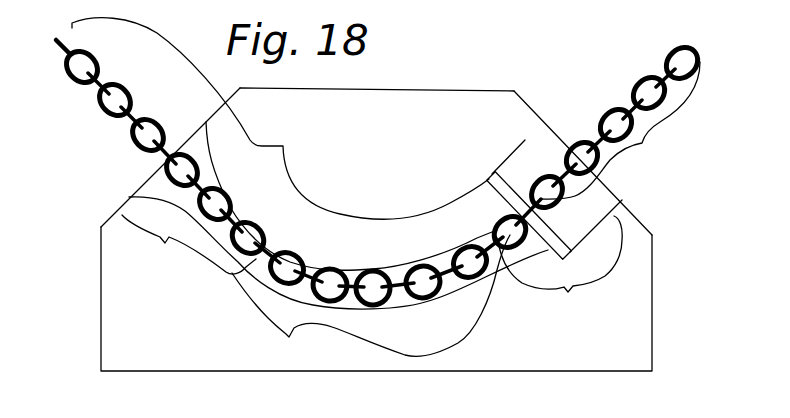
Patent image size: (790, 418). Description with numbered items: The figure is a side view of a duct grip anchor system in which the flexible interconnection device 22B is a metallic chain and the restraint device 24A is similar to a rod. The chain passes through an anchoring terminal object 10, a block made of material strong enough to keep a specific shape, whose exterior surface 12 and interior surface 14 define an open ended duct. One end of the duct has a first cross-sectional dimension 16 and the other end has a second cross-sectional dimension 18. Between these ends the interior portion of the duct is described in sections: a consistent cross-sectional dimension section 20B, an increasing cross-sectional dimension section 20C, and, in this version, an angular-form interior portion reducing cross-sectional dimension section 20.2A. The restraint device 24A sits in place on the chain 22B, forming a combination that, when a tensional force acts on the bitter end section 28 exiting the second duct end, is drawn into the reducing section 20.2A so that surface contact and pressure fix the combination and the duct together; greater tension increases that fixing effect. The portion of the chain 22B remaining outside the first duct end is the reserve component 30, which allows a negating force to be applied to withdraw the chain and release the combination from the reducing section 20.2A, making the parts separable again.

The anchoring terminal object 10 is at (390, 148).
The exterior surface 12 is at (474, 90).
The interior surface 14 is at (526, 137).
The first cross-sectional dimension 16 is at (625, 198).
The second cross-sectional dimension 18 is at (190, 134).
The consistent cross-sectional dimension section 20B is at (371, 300).
The increasing cross-sectional dimension section 20C is at (333, 253).
The interior portion reducing cross-sectional dimension section 20.2A is at (559, 275).
The flexible interconnection device 22B is at (667, 59).
The restraint device 24A is at (554, 225).
The bitter end section 28 is at (286, 139).
The reserve component 30 is at (620, 130).